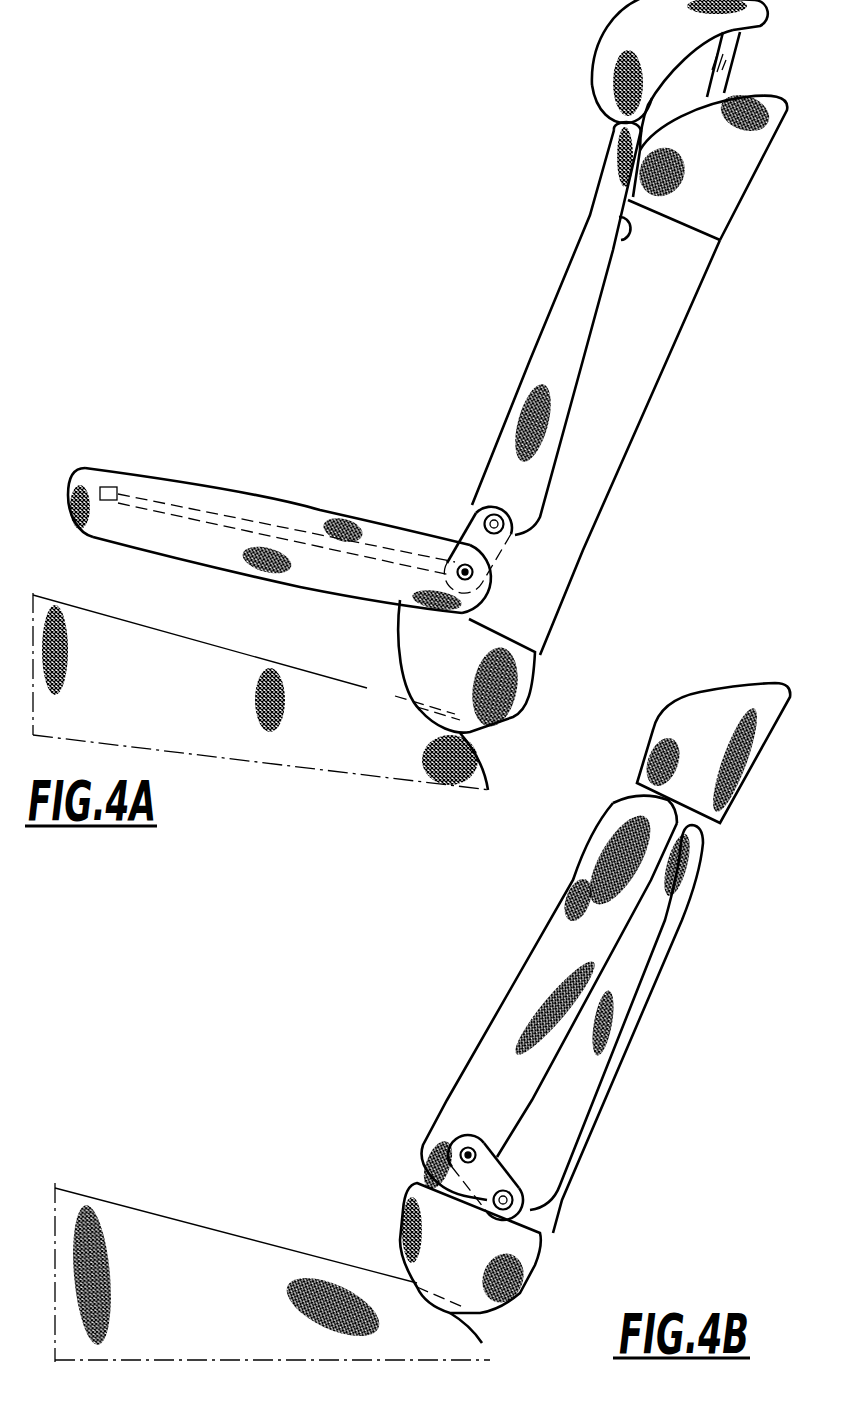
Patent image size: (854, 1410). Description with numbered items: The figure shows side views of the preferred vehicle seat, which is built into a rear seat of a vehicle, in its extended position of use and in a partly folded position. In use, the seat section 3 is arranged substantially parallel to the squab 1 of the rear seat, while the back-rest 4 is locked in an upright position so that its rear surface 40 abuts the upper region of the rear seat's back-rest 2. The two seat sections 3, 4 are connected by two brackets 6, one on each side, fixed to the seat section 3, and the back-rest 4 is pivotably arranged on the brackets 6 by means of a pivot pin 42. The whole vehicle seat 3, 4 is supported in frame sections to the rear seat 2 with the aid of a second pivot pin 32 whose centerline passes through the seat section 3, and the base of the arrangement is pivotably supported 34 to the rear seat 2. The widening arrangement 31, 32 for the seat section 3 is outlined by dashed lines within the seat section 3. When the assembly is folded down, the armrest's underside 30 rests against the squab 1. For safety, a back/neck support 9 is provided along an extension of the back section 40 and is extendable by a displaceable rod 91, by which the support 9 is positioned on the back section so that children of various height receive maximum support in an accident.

In FIG. 4A, the squab 1 is at (198, 657).
In FIG. 4A, the back-rest of the rear seat 2 is at (760, 100).
In FIG. 4A, the seat section 3 is at (279, 524).
In FIG. 4A, the back-rest 4 is at (557, 287).
In FIG. 4A, the bracket 6 is at (447, 540).
In FIG. 4A, the back/neck support 9 is at (610, 77).
In FIG. 4A, the armrest's underside 30 is at (307, 590).
In FIG. 4B, the armrest's underside 30 is at (517, 977).
In FIG. 4A, the widening arrangement 31 is at (120, 495).
In FIG. 4A, the second pivot pin 32 is at (277, 493).
In FIG. 4A, the pivotable support 34 is at (473, 573).
In FIG. 4B, the pivotable support 34 is at (460, 1150).
In FIG. 4A, the rear surface 40 is at (620, 237).
In FIG. 4A, the pivot pin 42 is at (513, 522).
In FIG. 4B, the pivot pin 42 is at (513, 1197).
In FIG. 4A, the displaceable rod 91 is at (727, 63).